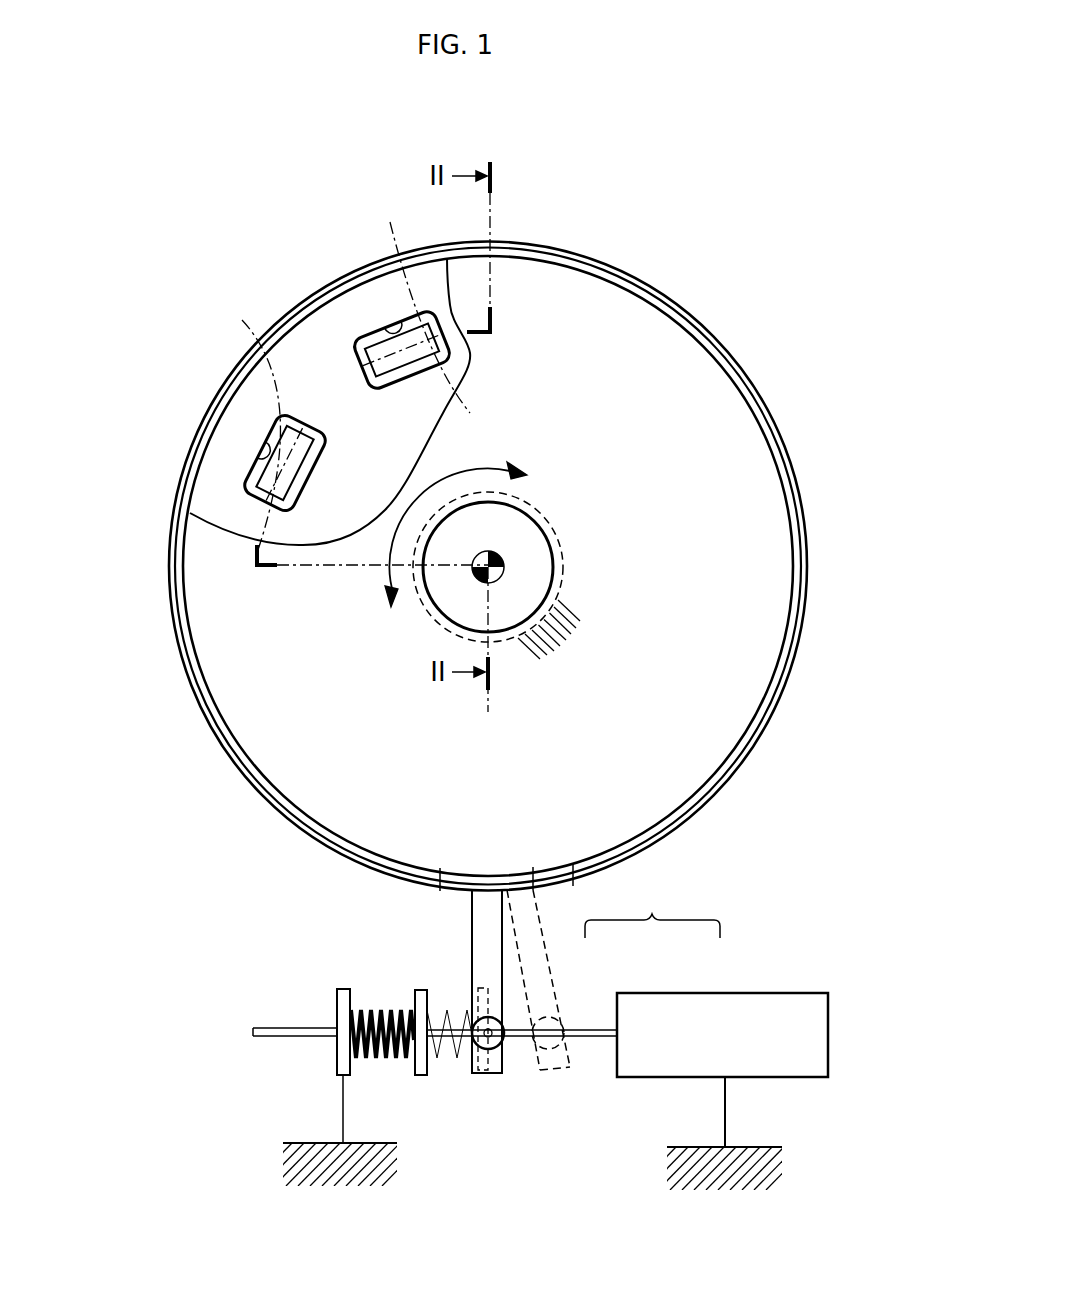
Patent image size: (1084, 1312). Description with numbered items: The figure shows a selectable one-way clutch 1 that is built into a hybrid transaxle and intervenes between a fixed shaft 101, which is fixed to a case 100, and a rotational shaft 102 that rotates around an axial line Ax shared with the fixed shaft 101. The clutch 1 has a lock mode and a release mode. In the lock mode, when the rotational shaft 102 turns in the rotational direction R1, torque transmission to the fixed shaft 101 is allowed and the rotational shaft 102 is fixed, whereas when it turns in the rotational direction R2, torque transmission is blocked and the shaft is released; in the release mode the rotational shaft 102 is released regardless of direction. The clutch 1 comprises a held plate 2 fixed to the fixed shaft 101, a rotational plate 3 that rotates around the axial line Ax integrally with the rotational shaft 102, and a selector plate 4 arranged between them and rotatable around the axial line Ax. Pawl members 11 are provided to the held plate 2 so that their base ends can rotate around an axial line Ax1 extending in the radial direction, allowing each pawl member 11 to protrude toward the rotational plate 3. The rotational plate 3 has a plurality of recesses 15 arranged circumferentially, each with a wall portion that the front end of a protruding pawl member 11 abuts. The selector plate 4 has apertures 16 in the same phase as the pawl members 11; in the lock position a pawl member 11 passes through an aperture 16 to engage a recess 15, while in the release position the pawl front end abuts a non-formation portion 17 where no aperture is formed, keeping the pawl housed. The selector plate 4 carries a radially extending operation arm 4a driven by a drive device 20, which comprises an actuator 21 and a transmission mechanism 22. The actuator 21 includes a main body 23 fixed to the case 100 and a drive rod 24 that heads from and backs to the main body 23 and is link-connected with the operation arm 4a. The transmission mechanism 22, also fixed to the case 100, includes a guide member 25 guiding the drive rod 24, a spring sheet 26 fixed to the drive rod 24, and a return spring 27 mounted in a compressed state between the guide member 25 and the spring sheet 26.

The selectable one-way clutch 1 is at (612, 195).
The held plate 2 is at (190, 513).
The rotational plate 3 is at (186, 592).
The selector plate 4 is at (212, 460).
The operation arm 4a is at (482, 920).
The pawl member 11 is at (390, 347).
The recess 15 is at (506, 440).
The aperture 16 is at (408, 312).
The non-formation portion 17 is at (332, 385).
The drive device 20 is at (758, 905).
The actuator 21 is at (652, 909).
The transmission mechanism 22 is at (540, 1095).
The main body 23 is at (678, 1010).
The drive rod 24 is at (593, 1030).
The guide member 25 is at (337, 1007).
The spring sheet 26 is at (423, 997).
The return spring 27 is at (360, 1007).
The case 100 is at (732, 560).
The fixed shaft 101 is at (562, 587).
The rotational shaft 102 is at (542, 552).
The axial line Ax is at (497, 555).
The axial line Ax1 is at (337, 373).
The rotational direction R1 is at (475, 519).
The rotational direction R2 is at (376, 610).